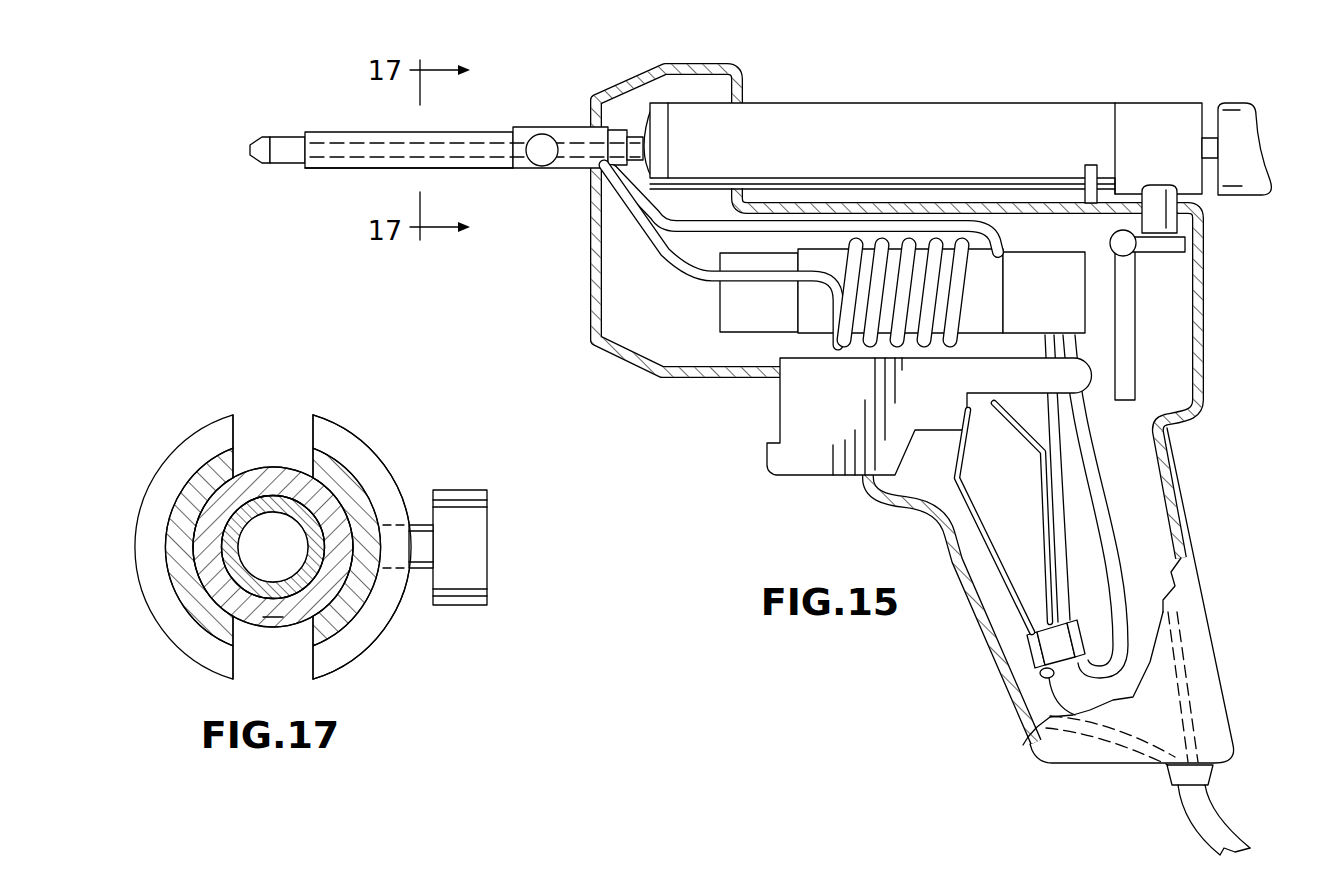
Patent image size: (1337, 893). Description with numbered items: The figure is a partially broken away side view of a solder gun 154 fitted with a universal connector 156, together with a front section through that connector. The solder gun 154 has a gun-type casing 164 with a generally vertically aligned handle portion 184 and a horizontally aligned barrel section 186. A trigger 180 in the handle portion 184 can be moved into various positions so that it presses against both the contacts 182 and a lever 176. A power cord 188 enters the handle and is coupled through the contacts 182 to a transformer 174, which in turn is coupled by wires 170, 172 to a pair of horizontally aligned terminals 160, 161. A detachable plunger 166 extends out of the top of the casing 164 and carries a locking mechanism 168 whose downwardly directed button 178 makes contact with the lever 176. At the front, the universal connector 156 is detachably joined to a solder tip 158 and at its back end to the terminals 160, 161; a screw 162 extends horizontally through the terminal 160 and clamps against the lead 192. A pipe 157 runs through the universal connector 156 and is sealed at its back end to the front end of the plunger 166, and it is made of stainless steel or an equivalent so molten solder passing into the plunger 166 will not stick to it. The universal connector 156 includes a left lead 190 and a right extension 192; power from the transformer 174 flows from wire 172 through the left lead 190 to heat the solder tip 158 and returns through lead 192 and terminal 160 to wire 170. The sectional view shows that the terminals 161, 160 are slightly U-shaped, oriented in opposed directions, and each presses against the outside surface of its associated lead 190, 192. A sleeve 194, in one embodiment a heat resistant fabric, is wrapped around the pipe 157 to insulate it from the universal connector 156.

In FIG. 15, the solder gun 154 is at (1042, 46).
In FIG. 15, the universal connector 156 is at (344, 110).
In FIG. 17, the universal connector 156 is at (188, 454).
In FIG. 15, the pipe 157 is at (373, 168).
In FIG. 17, the pipe 157 is at (258, 500).
In FIG. 15, the solder tip 158 is at (258, 155).
In FIG. 15, the terminal 160 is at (566, 127).
In FIG. 17, the terminal 160 is at (365, 455).
In FIG. 17, the terminal 161 is at (165, 478).
In FIG. 15, the screw 162 is at (542, 168).
In FIG. 17, the screw 162 is at (468, 552).
In FIG. 15, the casing 164 is at (650, 366).
In FIG. 15, the detachable plunger 166 is at (856, 103).
In FIG. 15, the locking mechanism 168 is at (1183, 78).
In FIG. 15, the wire 170 is at (653, 258).
In FIG. 15, the wire 172 is at (708, 207).
In FIG. 15, the transformer 174 is at (1037, 270).
In FIG. 15, the lever 176 is at (1137, 340).
In FIG. 15, the button 178 is at (1182, 224).
In FIG. 15, the trigger 180 is at (820, 455).
In FIG. 15, the contacts 182 is at (990, 532).
In FIG. 15, the handle portion 184 is at (1218, 539).
In FIG. 15, the barrel section 186 is at (1222, 298).
In FIG. 15, the power cord 188 is at (1215, 820).
In FIG. 17, the left lead 190 is at (178, 587).
In FIG. 15, the right extension (lead) 192 is at (474, 170).
In FIG. 17, the right extension (lead) 192 is at (340, 613).
In FIG. 17, the sleeve 194 is at (277, 623).